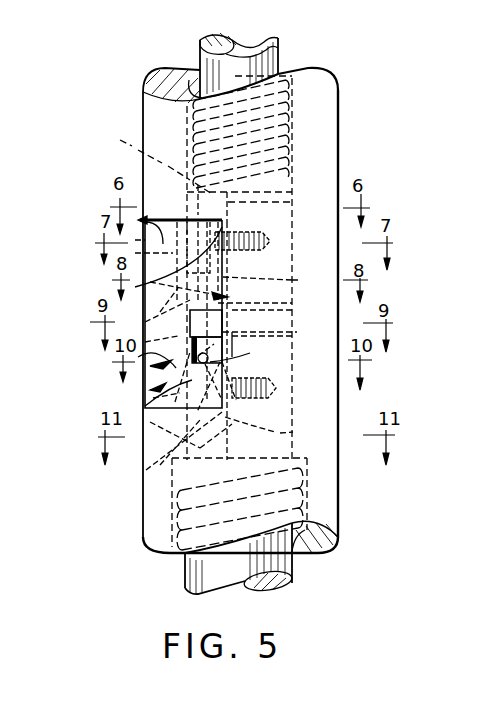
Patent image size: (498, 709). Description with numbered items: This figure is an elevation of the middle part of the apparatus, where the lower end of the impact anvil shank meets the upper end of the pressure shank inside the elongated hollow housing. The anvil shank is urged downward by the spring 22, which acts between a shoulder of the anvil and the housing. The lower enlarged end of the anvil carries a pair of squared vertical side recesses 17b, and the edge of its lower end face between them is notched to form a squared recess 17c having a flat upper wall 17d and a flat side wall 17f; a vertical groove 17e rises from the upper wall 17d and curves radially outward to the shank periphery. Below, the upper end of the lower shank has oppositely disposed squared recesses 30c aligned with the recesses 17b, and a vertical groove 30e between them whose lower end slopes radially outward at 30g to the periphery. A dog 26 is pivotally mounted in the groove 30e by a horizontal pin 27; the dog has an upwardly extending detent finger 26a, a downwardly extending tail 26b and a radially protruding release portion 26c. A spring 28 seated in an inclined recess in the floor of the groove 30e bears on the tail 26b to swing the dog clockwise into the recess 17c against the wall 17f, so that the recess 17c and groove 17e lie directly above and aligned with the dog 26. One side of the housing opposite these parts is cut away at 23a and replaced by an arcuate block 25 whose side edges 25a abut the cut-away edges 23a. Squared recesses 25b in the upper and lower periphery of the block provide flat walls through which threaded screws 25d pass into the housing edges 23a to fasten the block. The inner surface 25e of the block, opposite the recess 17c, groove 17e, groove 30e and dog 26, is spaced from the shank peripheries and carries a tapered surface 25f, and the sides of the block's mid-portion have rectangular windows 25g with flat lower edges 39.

The spring 22 is at (338, 110).
The vertical side recesses 17b is at (305, 190).
The squared recess 17c is at (277, 320).
The flat upper wall 17d is at (194, 259).
The vertical groove 17e is at (314, 280).
The flat side wall 17f is at (232, 272).
The block 25 is at (140, 219).
The side edges 25a is at (150, 282).
The squared recesses 25b is at (206, 280).
The threaded screws 25d is at (238, 255).
The inner surface 25e is at (100, 259).
The tapered surface 25f is at (104, 338).
The rectangular windows 25g is at (215, 320).
The cut-away side edges 23a is at (104, 243).
The dog 26 is at (110, 395).
The detent finger 26a is at (104, 316).
The tail 26b is at (150, 413).
The release portion 26c is at (122, 375).
The pin 27 is at (202, 353).
The spring 28 is at (337, 460).
The vertical recesses 30c is at (218, 457).
The vertical groove 30e is at (270, 373).
The sloping lower end of groove 30g is at (140, 470).
The flat lower edges 39 is at (240, 379).